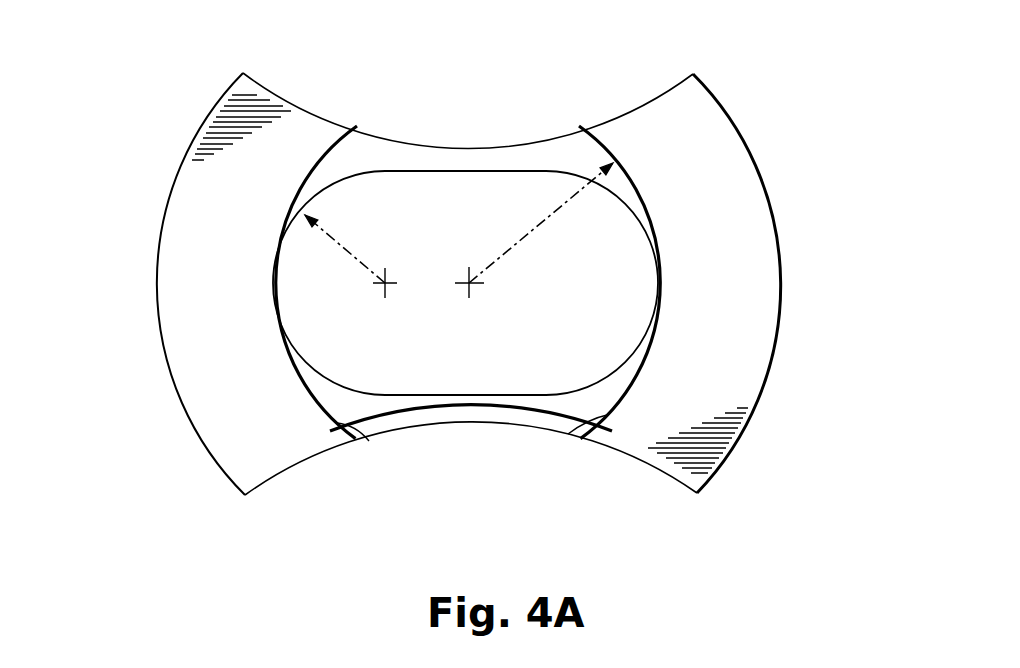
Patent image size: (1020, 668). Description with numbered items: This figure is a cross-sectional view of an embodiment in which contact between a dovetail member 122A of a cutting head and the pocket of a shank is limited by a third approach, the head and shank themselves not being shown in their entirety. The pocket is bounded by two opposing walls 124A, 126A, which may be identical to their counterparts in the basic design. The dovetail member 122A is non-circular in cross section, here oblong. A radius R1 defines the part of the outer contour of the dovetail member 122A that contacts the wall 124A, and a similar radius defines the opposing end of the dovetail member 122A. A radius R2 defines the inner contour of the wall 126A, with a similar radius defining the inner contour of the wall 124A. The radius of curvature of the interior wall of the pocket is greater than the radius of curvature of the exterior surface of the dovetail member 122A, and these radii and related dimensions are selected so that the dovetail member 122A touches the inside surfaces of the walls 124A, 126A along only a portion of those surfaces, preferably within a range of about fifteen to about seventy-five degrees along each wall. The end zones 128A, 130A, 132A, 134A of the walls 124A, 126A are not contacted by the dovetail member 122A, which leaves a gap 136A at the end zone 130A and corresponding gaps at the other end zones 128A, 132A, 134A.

The dovetail member 122A is at (543, 352).
The wall 124A is at (145, 328).
The wall 126A is at (807, 222).
The end zone 128A is at (320, 162).
The end zone 130A is at (589, 136).
The end zone 132A is at (570, 434).
The end zone 134A is at (368, 441).
The gap 136A is at (553, 160).
The radius R1 is at (353, 256).
The radius R2 is at (574, 200).